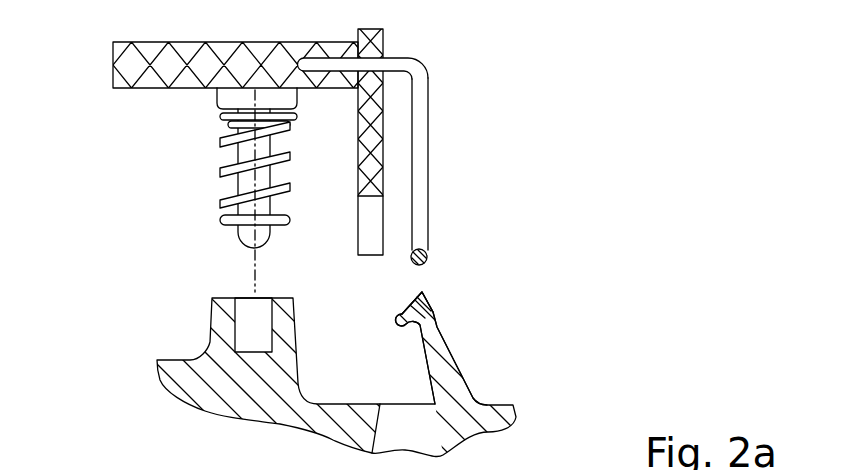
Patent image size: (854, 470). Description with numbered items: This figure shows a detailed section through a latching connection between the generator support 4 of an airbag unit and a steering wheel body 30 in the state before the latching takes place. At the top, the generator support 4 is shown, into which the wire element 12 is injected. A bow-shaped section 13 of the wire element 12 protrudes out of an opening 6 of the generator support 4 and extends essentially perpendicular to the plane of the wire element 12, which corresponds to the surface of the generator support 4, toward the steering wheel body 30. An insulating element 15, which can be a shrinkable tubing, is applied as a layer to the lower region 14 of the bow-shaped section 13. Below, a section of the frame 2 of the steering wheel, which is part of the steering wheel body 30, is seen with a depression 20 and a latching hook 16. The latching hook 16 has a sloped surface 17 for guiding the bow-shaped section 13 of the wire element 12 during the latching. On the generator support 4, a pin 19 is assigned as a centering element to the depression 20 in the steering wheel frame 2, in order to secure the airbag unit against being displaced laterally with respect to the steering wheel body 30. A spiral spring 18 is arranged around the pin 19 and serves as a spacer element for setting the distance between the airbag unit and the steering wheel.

The frame 2 is at (329, 359).
The generator support 4 is at (148, 86).
The openings 6 is at (426, 161).
The wire element 12 is at (426, 136).
The bow-shaped section 13 is at (428, 135).
The lower region 14 is at (437, 253).
The insulating element 15 is at (409, 261).
The latching hook 16 is at (440, 294).
The sloped surface 17 is at (479, 331).
The spiral springs 18 is at (220, 177).
The pins 19 is at (237, 243).
The depression 20 is at (243, 332).
The steering wheel body 30 is at (323, 363).